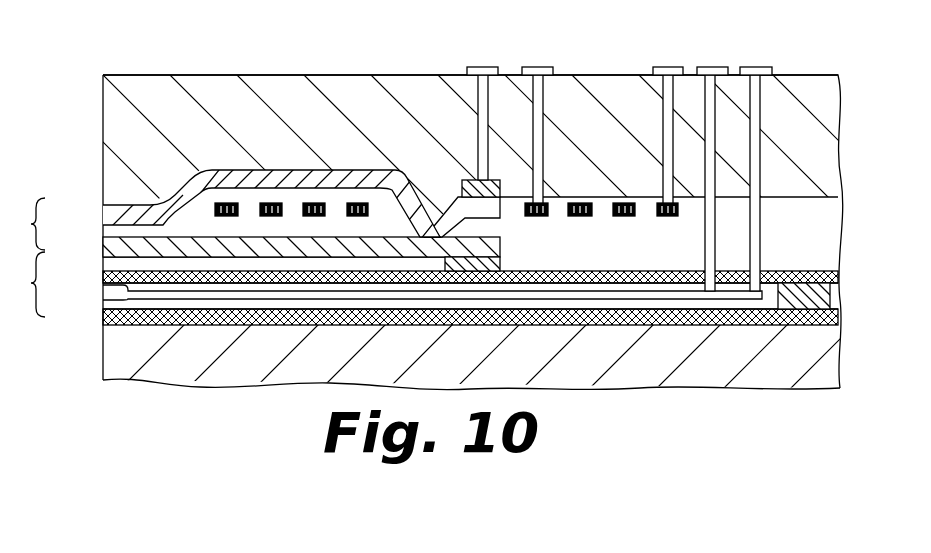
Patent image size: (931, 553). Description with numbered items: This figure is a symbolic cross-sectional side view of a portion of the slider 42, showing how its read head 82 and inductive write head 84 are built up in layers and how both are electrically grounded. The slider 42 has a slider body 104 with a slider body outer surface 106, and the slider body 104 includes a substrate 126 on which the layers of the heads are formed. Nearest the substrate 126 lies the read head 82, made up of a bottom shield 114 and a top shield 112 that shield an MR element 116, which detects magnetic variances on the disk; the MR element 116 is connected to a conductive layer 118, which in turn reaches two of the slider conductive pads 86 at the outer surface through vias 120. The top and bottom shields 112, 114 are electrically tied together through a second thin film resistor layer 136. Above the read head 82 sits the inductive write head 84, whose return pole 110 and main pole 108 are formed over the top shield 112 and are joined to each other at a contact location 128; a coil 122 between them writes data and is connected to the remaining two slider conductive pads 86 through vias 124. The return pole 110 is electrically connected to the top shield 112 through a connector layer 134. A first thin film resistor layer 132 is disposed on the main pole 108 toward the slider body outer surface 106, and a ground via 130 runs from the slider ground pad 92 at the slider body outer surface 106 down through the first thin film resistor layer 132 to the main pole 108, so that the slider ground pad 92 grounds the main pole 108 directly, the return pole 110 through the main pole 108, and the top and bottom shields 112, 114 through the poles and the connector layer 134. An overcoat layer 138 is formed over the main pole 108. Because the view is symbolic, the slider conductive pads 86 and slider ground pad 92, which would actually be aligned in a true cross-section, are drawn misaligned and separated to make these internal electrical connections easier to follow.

The slider 42 is at (124, 58).
The read head 82 is at (25, 284).
The inductive write head 84 is at (26, 224).
The slider conductive pads 86 is at (540, 67).
The slider ground pad 92 is at (484, 67).
The slider body 104 is at (103, 120).
The slider body outer surface 106 is at (271, 75).
The main pole 108 is at (103, 220).
The return pole 110 is at (103, 243).
The top shield 112 is at (103, 265).
The bottom shield 114 is at (103, 298).
The MR element 116 is at (103, 278).
The conductive layer 118 is at (212, 300).
The vias 120 is at (713, 127).
The coil 122 is at (268, 202).
The vias 124 is at (543, 113).
The substrate 126 is at (103, 362).
The contact location 128 is at (432, 228).
The ground via 130 is at (478, 103).
The first thin film resistor layer 132 is at (498, 179).
The connector layer 134 is at (500, 264).
The second thin film resistor layer 136 is at (808, 283).
The overcoat layer 138 is at (103, 188).